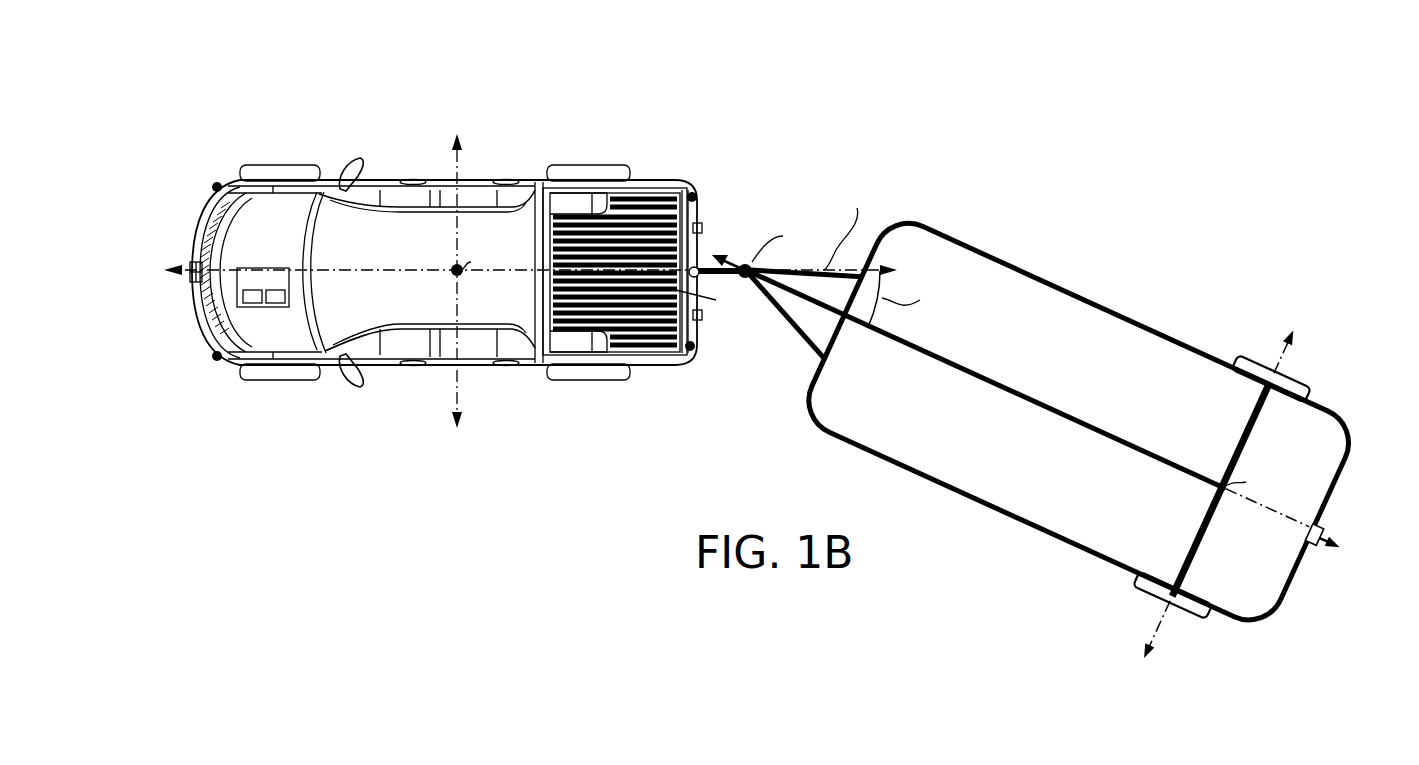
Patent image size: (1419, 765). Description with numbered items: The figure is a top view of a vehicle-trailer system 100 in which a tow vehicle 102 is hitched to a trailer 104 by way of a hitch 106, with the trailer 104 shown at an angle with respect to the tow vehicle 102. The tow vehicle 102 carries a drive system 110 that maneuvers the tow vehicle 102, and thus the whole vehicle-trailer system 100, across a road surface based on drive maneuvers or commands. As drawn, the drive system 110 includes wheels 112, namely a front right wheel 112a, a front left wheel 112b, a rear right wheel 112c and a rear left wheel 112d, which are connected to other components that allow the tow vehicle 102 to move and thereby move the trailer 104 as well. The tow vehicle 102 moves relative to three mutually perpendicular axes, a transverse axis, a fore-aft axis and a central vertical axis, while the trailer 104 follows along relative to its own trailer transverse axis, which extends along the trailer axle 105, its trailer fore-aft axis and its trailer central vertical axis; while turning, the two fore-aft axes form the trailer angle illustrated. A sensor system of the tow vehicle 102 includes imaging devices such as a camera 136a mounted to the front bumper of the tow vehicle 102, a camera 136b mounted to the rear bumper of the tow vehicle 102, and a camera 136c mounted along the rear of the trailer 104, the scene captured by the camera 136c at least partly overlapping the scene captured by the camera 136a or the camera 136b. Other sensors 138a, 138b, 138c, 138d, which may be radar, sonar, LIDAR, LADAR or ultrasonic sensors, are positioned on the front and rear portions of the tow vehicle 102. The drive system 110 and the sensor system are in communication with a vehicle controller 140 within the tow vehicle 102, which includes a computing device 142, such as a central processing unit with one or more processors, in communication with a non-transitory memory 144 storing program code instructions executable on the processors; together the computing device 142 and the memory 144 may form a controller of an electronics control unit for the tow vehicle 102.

The vehicle-trailer system 100 is at (1360, 92).
The tow vehicle 102 is at (719, 386).
The trailer 104 is at (1089, 435).
The trailer axle 105 is at (1221, 489).
The hitch 106 is at (964, 373).
The drive system 110 is at (775, 386).
The wheels 112 is at (775, 386).
The front right wheel 112a is at (290, 165).
The front left wheel 112b is at (290, 381).
The rear right wheel 112c is at (601, 165).
The rear left wheel 112d is at (593, 401).
The camera 136a is at (192, 264).
The camera 136b is at (699, 266).
The camera 136c is at (1314, 534).
The sensor 138a is at (215, 184).
The sensor 138b is at (214, 360).
The sensor 138c is at (694, 192).
The sensor 138d is at (691, 352).
The vehicle controller 140 is at (263, 304).
The computing device 142 is at (252, 303).
The memory 144 is at (276, 303).